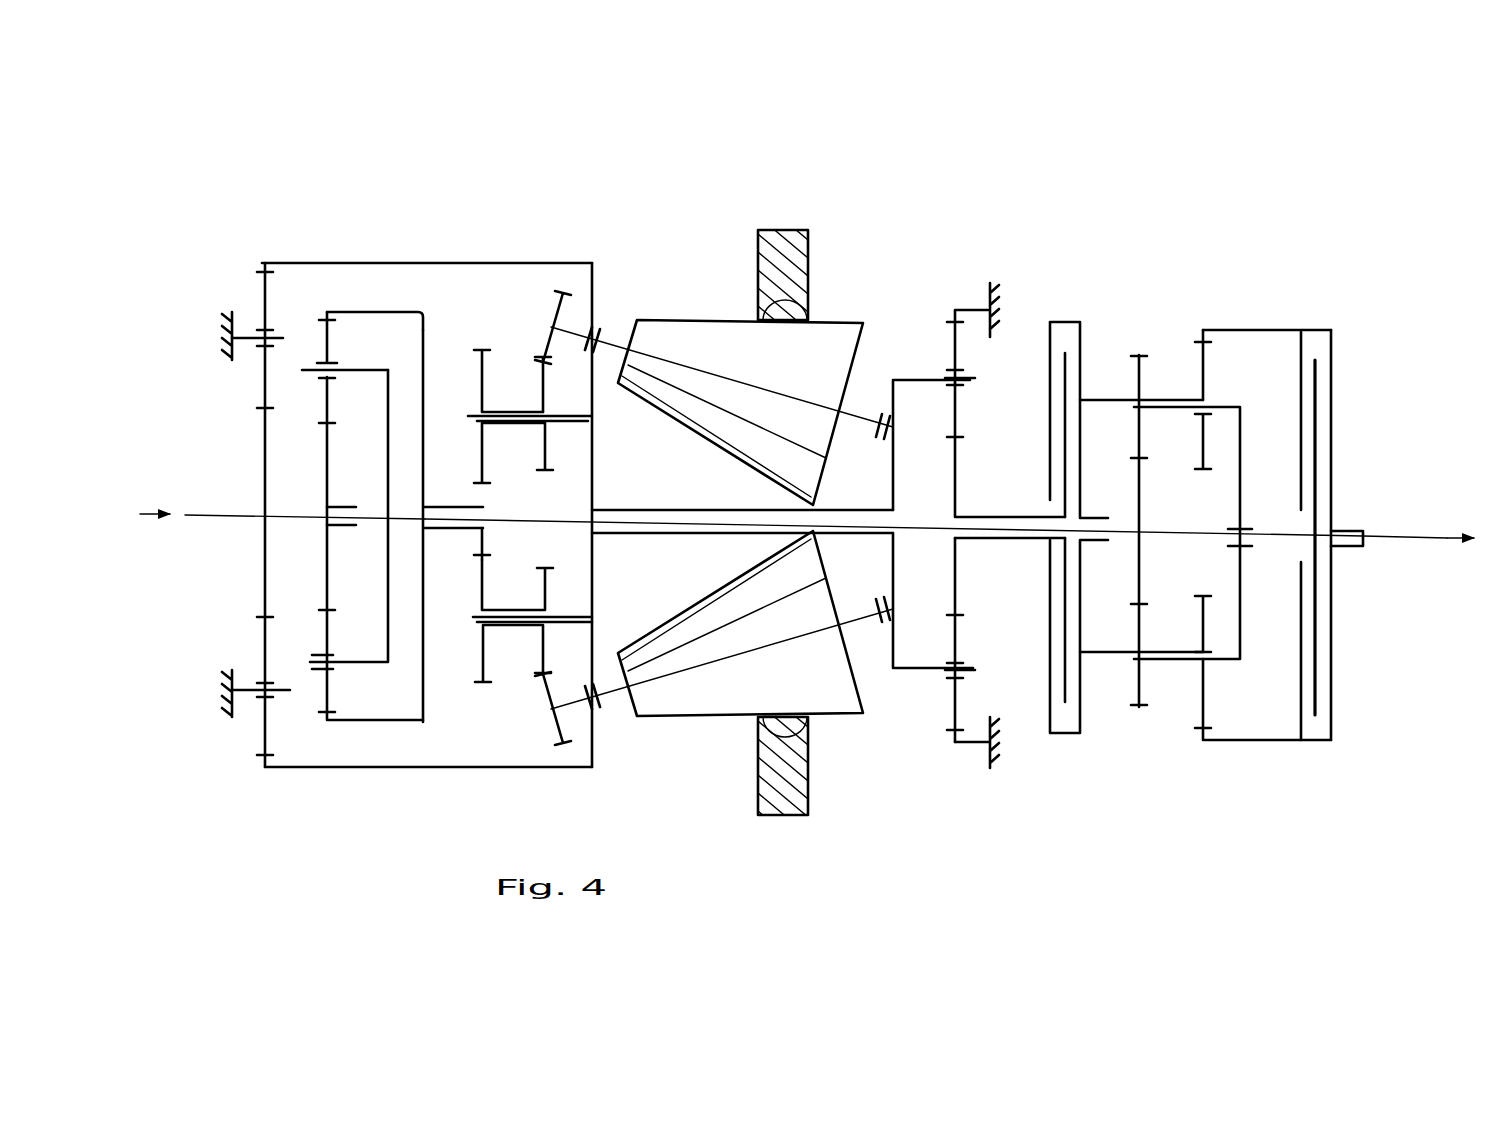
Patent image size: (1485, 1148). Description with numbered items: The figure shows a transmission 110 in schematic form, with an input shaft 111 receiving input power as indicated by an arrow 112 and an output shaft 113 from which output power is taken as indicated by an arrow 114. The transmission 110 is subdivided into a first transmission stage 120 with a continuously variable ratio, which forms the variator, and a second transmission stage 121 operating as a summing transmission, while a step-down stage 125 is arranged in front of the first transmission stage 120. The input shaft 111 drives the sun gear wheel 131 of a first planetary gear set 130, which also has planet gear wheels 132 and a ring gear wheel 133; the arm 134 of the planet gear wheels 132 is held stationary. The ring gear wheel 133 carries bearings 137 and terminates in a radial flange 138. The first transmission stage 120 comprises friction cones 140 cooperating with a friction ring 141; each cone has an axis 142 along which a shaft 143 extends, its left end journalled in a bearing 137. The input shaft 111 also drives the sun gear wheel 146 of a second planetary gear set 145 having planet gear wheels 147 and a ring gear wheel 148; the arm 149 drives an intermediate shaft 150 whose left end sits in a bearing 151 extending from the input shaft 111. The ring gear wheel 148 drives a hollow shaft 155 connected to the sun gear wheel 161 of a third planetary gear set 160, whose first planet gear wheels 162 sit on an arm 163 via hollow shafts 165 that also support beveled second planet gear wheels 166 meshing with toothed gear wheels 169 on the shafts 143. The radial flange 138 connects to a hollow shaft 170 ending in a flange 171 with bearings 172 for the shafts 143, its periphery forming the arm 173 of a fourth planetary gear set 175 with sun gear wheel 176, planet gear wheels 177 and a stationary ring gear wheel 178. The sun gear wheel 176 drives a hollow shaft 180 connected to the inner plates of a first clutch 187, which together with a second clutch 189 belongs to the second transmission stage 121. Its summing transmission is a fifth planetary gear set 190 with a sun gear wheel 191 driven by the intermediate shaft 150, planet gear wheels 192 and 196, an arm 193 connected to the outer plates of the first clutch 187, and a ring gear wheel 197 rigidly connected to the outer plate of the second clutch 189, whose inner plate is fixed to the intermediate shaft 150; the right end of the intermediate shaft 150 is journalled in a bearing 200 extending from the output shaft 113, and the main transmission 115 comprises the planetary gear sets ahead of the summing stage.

The transmission 110 is at (1233, 217).
The input shaft 111 is at (220, 515).
The arrow 112 is at (150, 512).
The output shaft 113 is at (1393, 537).
The arrow 114 is at (1465, 537).
The main transmission 115 is at (198, 243).
The first transmission stage 120 is at (673, 280).
The second transmission stage 121 is at (1272, 320).
The step-down stage 125 is at (400, 248).
The first planetary gear set 130 is at (245, 300).
The sun gear wheel 131 is at (268, 480).
The planet gear wheels 132 is at (270, 375).
The ring gear wheel 133 is at (280, 268).
The arm 134 is at (245, 342).
The bearings 137 is at (598, 333).
The radial flange 138 is at (600, 490).
The friction cones 140 is at (726, 342).
The friction ring 141 is at (795, 267).
The axes 142 is at (785, 400).
The shaft 143 is at (880, 430).
The second planetary gear set 145 is at (375, 732).
The sun gear wheel 146 is at (332, 478).
The planet gear wheels 147 is at (328, 401).
The ring gear wheel 148 is at (330, 316).
The arm 149 is at (362, 368).
The intermediate shaft 150 is at (503, 515).
The bearing 151 is at (350, 527).
The hollow shaft 155 is at (444, 510).
The third planetary gear set 160 is at (491, 692).
The sun gear wheel 161 is at (487, 547).
The first planet gear wheels 162 is at (487, 603).
The arm 163 is at (568, 420).
The hollow shafts 165 is at (507, 408).
The second planet gear wheels 166 is at (546, 396).
The toothed gear wheels 169 is at (553, 318).
The hollow shaft 170 is at (720, 510).
The flange 171 is at (897, 493).
The bearings 172 is at (893, 418).
The arm 173 is at (924, 372).
The fourth planetary gear set 175 is at (943, 292).
The sun gear wheel 176 is at (958, 470).
The planet gear wheels 177 is at (958, 410).
The ring gear wheel 178 is at (978, 310).
The hollow shaft 180 is at (1017, 541).
The first clutch 187 is at (1066, 362).
The second clutch 189 is at (1318, 393).
The fifth planetary gear set 190 is at (1145, 335).
The sun gear wheel 191 is at (1148, 500).
The planet gear wheels 192 is at (1148, 428).
The arm 193 is at (1105, 405).
The planet gear wheels 196 is at (1206, 378).
The ring gear wheel 197 is at (1208, 333).
The bearing 200 is at (1345, 530).